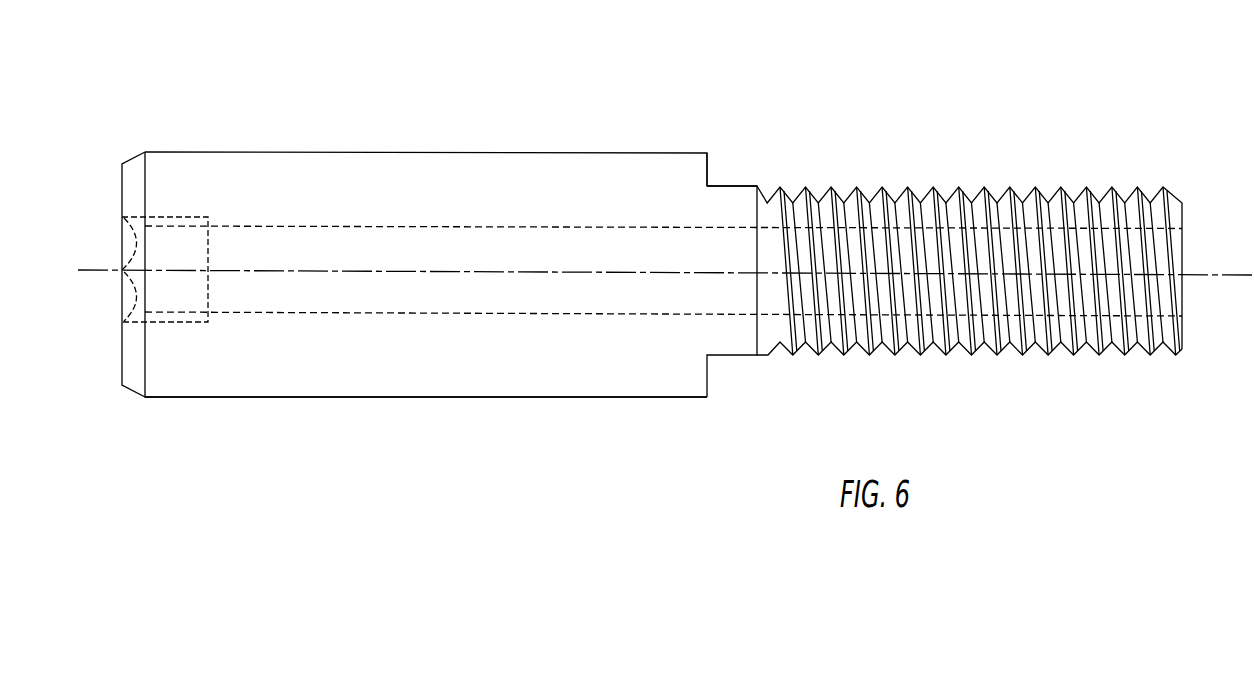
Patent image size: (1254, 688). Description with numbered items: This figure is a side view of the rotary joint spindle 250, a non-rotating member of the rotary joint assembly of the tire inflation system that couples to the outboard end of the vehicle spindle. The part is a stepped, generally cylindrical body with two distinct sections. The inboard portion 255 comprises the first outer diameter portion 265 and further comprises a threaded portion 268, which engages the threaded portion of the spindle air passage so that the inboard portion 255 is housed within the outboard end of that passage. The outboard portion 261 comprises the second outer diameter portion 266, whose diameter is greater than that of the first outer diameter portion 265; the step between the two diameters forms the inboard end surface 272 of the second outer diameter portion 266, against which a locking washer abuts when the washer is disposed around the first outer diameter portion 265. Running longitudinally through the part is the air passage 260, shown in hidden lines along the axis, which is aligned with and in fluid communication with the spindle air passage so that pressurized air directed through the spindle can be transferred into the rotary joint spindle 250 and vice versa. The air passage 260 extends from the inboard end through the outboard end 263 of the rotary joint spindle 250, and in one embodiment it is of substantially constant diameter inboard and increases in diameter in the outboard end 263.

The rotary joint spindle 250 is at (116, 118).
The inboard portion 255 is at (1048, 357).
The air passage 260 is at (238, 287).
The outboard portion 261 is at (390, 398).
The outboard end 263 is at (122, 362).
The first outer diameter portion 265 is at (752, 357).
The second outer diameter portion 266 is at (550, 398).
The threaded portion 268 is at (869, 357).
The inboard end surface 272 is at (709, 162).